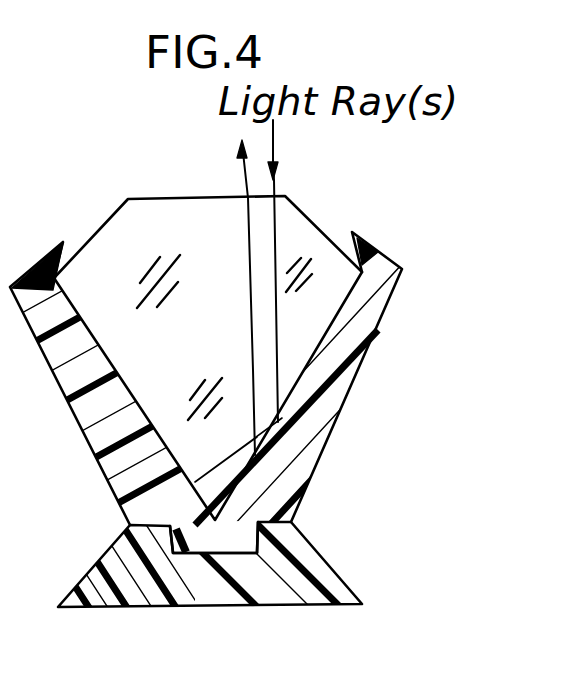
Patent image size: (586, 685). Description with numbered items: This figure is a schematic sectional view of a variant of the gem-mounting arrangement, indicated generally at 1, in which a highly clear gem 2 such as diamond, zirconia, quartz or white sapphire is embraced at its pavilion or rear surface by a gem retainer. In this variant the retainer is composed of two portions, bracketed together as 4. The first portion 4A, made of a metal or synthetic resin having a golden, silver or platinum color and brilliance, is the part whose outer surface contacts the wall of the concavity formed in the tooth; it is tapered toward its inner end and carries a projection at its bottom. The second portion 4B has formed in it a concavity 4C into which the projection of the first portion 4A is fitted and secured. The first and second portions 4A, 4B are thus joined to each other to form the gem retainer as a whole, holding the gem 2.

The prism holding device 1 is at (433, 303).
The gem 2 is at (112, 252).
The holder 4 is at (452, 412).
The first portion 4A is at (330, 405).
The second portion 4B is at (340, 528).
The concavity 4C is at (216, 552).